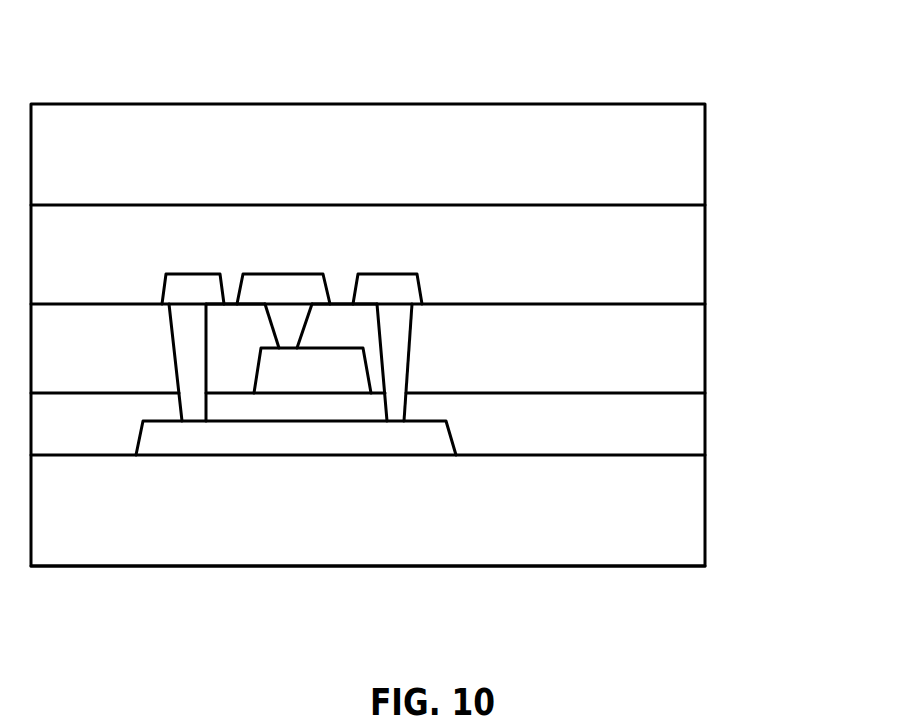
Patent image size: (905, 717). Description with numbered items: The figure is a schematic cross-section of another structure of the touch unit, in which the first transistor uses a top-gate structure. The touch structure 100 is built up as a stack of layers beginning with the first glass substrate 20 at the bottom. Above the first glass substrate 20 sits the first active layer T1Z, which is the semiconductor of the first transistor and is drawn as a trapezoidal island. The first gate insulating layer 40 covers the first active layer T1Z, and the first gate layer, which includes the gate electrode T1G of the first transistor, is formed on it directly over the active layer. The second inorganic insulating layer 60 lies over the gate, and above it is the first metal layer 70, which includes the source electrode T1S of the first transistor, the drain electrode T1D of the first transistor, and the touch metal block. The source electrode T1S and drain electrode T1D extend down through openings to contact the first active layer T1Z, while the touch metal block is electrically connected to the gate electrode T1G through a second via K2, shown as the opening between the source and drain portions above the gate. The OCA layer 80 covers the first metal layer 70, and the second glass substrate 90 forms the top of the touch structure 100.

The touch structure 100 is at (549, 49).
The second glass substrate 90 is at (680, 178).
The OCA layer 80 is at (680, 273).
The first metal layer 70 is at (330, 290).
The second inorganic insulating layer 60 is at (680, 363).
The first gate insulating layer 40 is at (680, 438).
The first glass substrate 20 is at (680, 523).
The second via K2 is at (291, 333).
The drain electrode of the first transistor T1D is at (193, 286).
The source electrode of the first transistor T1S is at (383, 282).
The gate electrode of the first transistor T1G is at (292, 373).
The first active layer T1Z is at (223, 440).